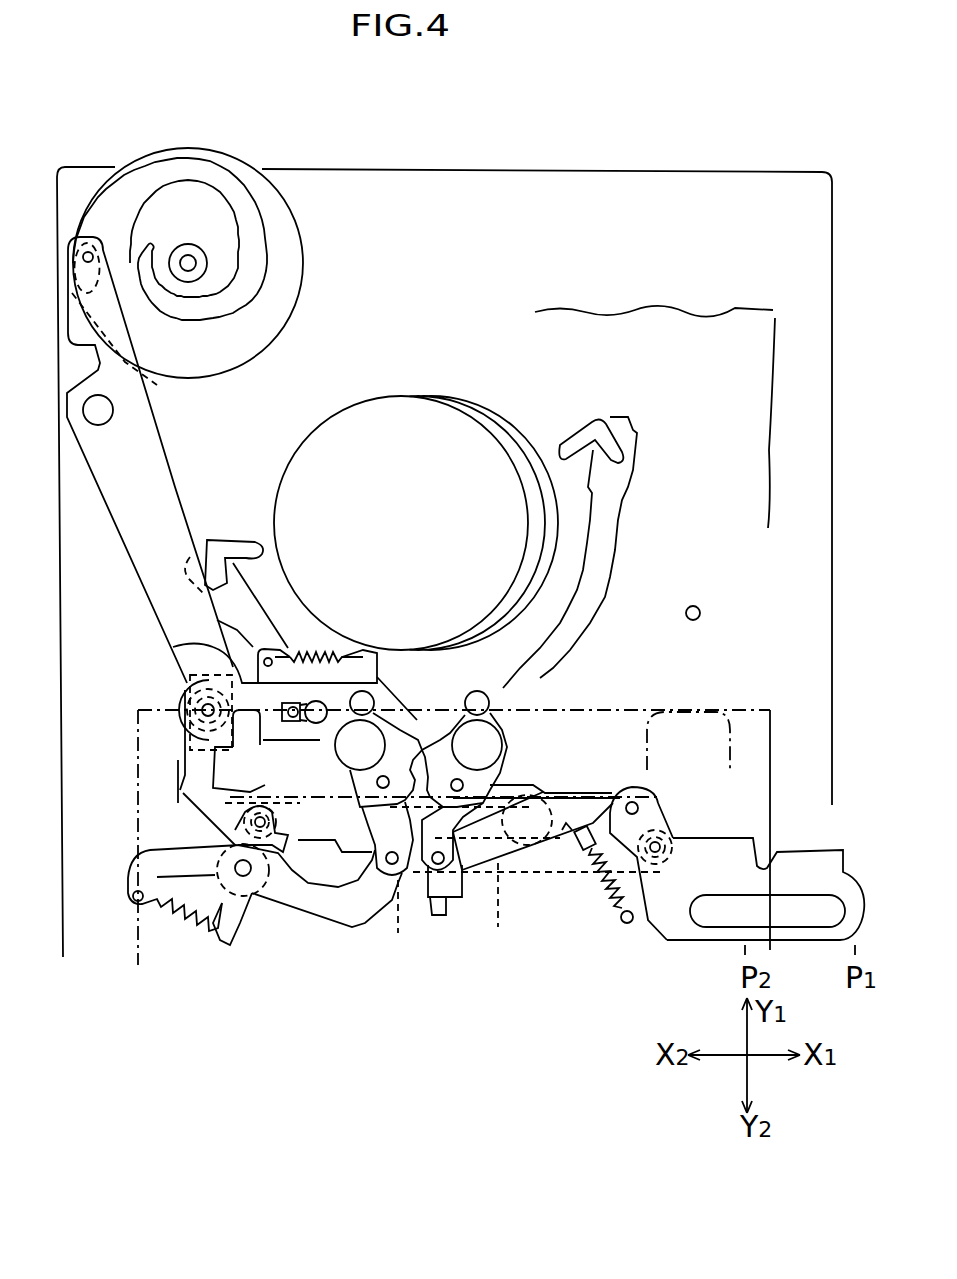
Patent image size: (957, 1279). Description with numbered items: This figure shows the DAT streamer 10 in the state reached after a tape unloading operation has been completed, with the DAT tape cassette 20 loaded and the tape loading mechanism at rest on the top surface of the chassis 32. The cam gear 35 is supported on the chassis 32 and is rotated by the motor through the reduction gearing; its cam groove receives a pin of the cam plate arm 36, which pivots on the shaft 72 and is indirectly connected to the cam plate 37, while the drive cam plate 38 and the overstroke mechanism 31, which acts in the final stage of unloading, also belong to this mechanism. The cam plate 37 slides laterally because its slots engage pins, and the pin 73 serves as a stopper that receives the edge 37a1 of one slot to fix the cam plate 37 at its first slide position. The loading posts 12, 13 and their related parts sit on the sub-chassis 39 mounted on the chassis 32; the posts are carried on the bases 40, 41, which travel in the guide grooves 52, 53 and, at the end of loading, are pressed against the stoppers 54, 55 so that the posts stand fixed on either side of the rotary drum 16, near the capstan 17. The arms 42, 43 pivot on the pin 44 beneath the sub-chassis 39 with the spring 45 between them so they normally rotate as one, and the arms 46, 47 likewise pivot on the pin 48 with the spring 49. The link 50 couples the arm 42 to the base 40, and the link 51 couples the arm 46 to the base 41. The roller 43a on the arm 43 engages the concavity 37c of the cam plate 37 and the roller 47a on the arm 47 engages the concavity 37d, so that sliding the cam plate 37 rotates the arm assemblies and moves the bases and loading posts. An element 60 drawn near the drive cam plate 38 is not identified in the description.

The DAT streamer 10 is at (540, 101).
The loading post 12 is at (350, 752).
The loading post 13 is at (493, 750).
The rotary drum 16 is at (318, 432).
The capstan 17 is at (700, 608).
The DAT tape cassette 20 is at (775, 732).
The overstroke mechanism 31 is at (337, 641).
The chassis 32 is at (625, 180).
The cam gear 35 is at (303, 244).
The cam plate arm 36 is at (127, 523).
The cam plate 37 is at (795, 848).
The X2-side edge of slot 37a1 is at (399, 923).
The concavity 37c is at (247, 810).
The concavity 37d is at (672, 870).
The drive cam plate 38 is at (175, 646).
The sub-chassis 39 is at (712, 312).
The base 40 is at (363, 800).
The base 41 is at (505, 790).
The arm 42 is at (309, 902).
The arm 43 is at (218, 907).
The roller 43a is at (240, 820).
The pin 44 is at (248, 880).
The spring 45 is at (187, 913).
The arm 46 is at (550, 823).
The arm 47 is at (662, 828).
The roller 47a is at (678, 833).
The pin 48 is at (630, 800).
The spring 49 is at (598, 890).
The link 50 is at (346, 842).
The link 51 is at (472, 840).
The guide groove 52 is at (260, 633).
The guide groove 53 is at (608, 554).
The stopper 54 is at (228, 537).
The stopper 55 is at (579, 428).
The spring 60 is at (312, 650).
The shaft 72 is at (110, 412).
The pin 73 is at (438, 900).